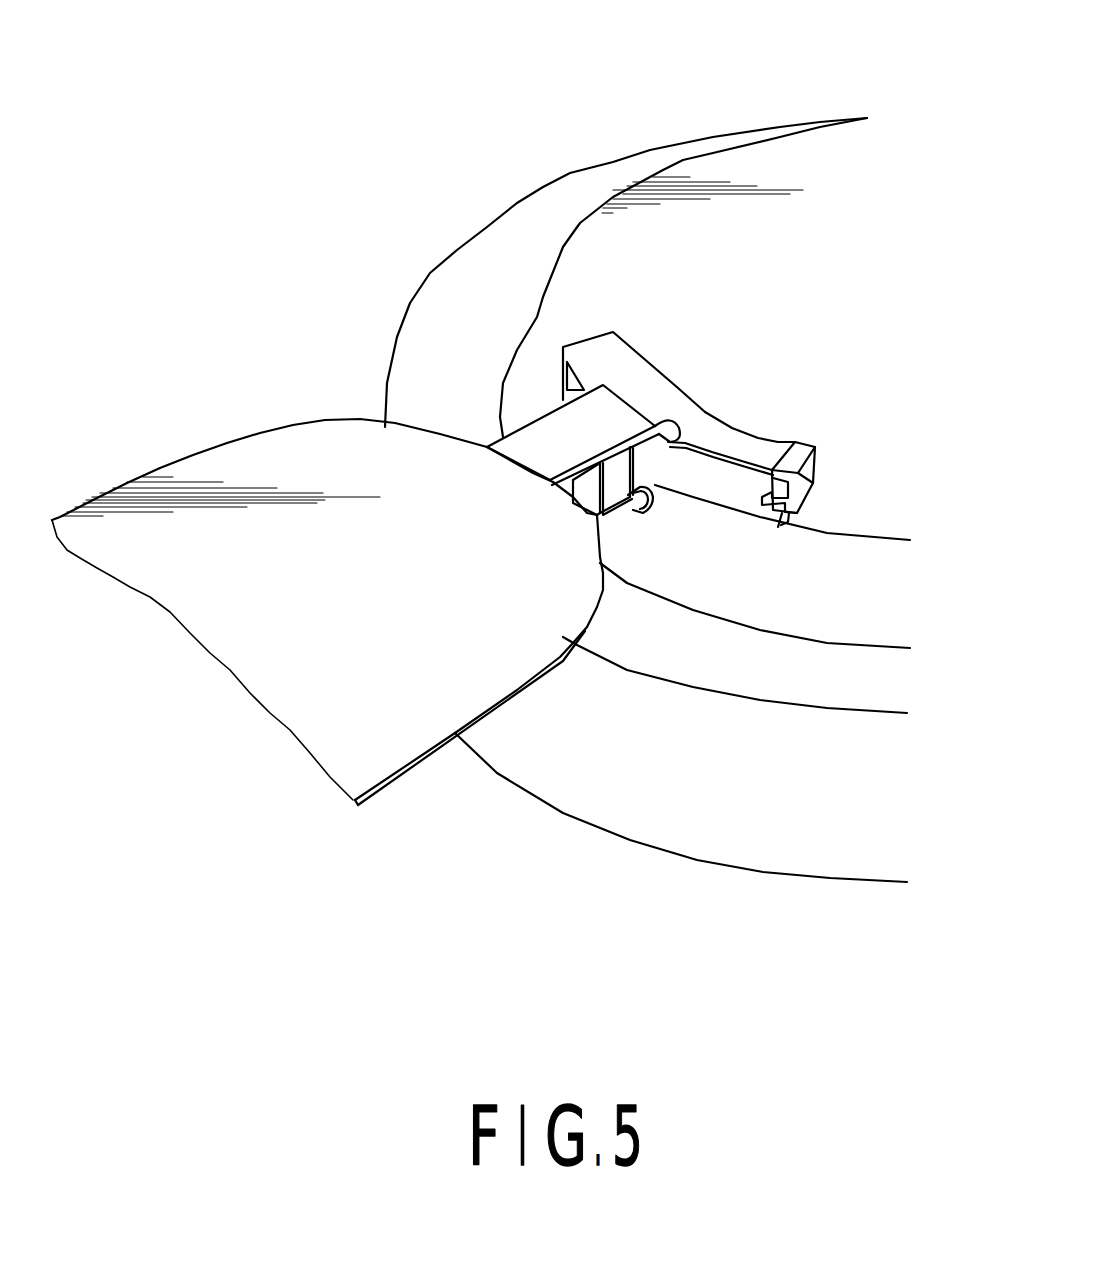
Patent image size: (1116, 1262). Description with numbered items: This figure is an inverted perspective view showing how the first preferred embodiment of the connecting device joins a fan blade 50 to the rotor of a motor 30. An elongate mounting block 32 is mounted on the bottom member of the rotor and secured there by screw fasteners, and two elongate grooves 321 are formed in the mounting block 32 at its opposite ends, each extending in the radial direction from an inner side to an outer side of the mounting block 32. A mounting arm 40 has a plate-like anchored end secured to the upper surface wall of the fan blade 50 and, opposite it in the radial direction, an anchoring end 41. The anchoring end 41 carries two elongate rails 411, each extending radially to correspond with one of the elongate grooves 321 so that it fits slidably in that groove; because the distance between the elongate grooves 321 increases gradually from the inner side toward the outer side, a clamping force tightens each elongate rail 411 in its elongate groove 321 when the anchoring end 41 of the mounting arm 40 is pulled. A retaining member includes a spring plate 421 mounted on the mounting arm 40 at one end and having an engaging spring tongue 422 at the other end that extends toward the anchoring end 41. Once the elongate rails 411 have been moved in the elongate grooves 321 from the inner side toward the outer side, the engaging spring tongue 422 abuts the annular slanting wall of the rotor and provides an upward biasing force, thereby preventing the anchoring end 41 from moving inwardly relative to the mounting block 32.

The motor 30 is at (647, 441).
The mounting block 32 is at (736, 560).
The elongate groove 321 is at (804, 666).
The mounting arm 40 is at (585, 489).
The anchoring end 41 is at (608, 375).
The elongate rail 411 is at (830, 434).
The spring plate 421 is at (599, 593).
The engaging spring tongue 422 is at (680, 644).
The fan blade 50 is at (327, 555).